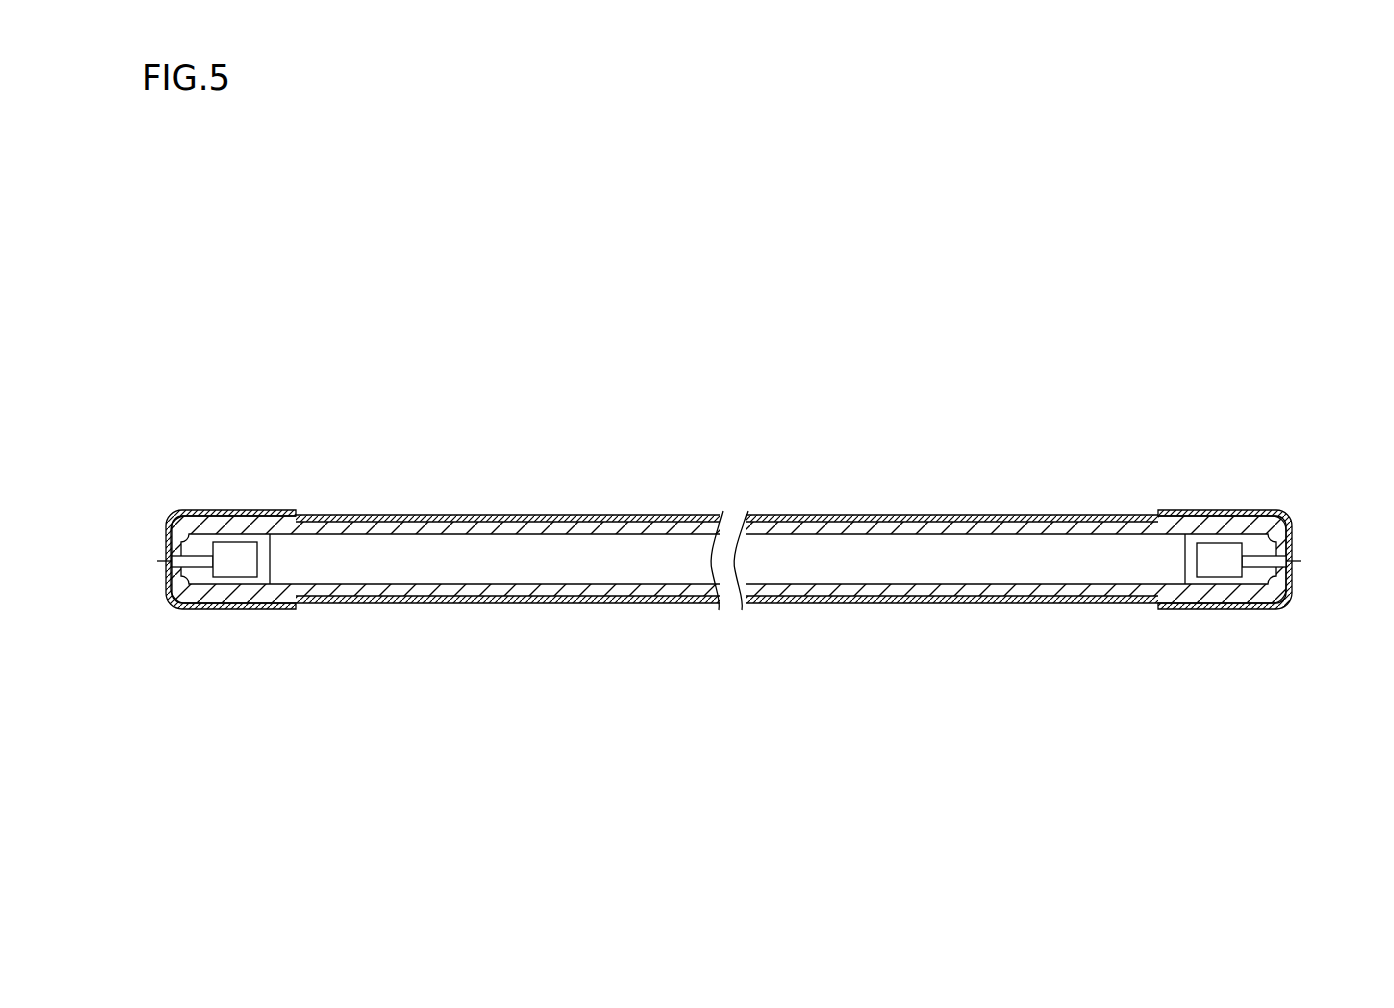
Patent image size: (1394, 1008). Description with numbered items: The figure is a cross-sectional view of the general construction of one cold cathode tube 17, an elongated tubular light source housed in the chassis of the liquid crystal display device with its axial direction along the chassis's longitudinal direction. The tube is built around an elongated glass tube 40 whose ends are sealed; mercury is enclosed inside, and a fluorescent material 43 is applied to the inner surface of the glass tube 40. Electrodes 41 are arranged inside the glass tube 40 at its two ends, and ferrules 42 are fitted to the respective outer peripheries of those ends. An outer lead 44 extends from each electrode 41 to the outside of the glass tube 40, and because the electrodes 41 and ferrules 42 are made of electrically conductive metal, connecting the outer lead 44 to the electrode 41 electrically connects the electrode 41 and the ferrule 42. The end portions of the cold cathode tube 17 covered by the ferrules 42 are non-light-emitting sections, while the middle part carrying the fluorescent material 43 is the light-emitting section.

The cold cathode tube 17 is at (902, 515).
The glass tube 40 is at (1058, 603).
The electrode 41 is at (240, 565).
The ferrule 42 is at (218, 607).
The fluorescent material 43 is at (1017, 585).
The outer lead 44 is at (168, 560).